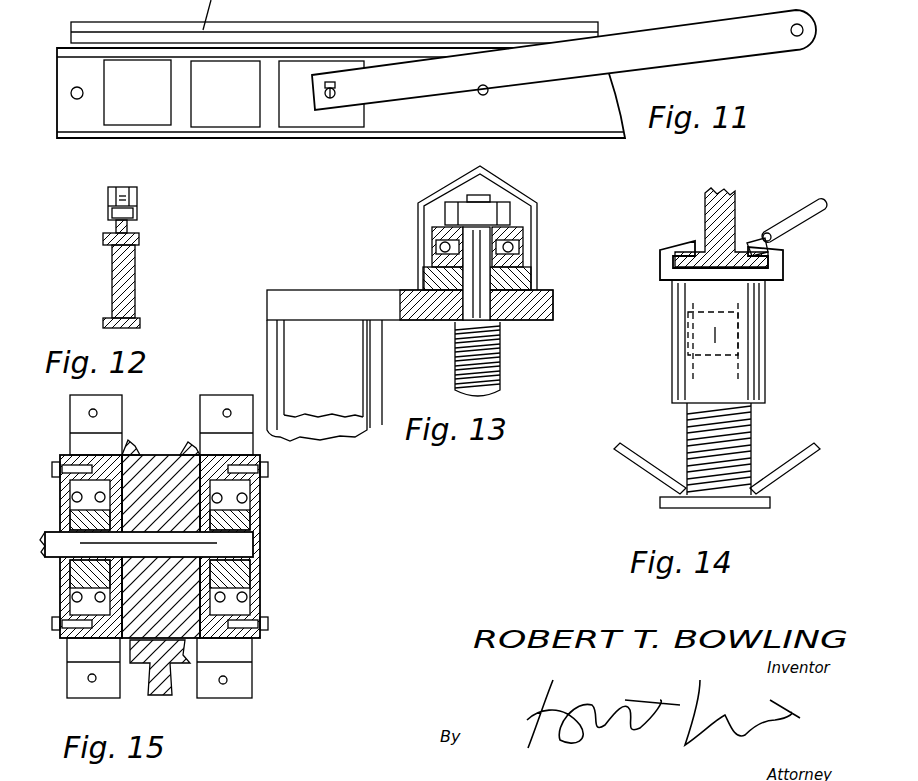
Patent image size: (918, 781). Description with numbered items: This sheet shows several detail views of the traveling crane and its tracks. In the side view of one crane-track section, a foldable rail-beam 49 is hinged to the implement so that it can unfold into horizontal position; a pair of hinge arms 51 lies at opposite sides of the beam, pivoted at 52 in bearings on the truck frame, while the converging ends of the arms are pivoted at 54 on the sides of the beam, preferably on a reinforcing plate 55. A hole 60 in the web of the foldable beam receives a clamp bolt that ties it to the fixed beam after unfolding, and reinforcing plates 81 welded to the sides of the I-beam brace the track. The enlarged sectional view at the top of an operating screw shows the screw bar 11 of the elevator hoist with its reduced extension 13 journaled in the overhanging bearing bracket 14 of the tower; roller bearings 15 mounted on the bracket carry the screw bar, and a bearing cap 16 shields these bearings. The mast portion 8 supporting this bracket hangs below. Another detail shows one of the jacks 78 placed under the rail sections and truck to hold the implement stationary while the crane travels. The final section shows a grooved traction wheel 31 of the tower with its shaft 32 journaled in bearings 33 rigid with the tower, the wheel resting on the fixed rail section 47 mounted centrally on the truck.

In FIG. 13, the hanging member 8 is at (375, 383).
In FIG. 13, the screw bar 11 is at (500, 378).
In FIG. 13, the reduced extension 13 is at (482, 243).
In FIG. 13, the bearing bracket 14 is at (540, 312).
In FIG. 13, the roller bearings 15 is at (440, 247).
In FIG. 13, the bearing cap 16 is at (538, 205).
In FIG. 15, the traction wheel 31 is at (145, 468).
In FIG. 15, the shaft 32 is at (55, 540).
In FIG. 15, the bearings 33 is at (255, 590).
In FIG. 15, the fixed rail section 47 is at (160, 677).
In FIG. 11, the foldable rail-beam 49 is at (341, 93).
In FIG. 11, the hinge arm 51 is at (564, 60).
In FIG. 11, the pivot 52 is at (800, 36).
In FIG. 11, the pivot 54 is at (335, 100).
In FIG. 11, the reinforcing plate 55 is at (305, 108).
In FIG. 11, the hole 60 is at (486, 95).
In FIG. 14, the jack 78 is at (749, 438).
In FIG. 11, the reinforcing plate 81 is at (225, 94).